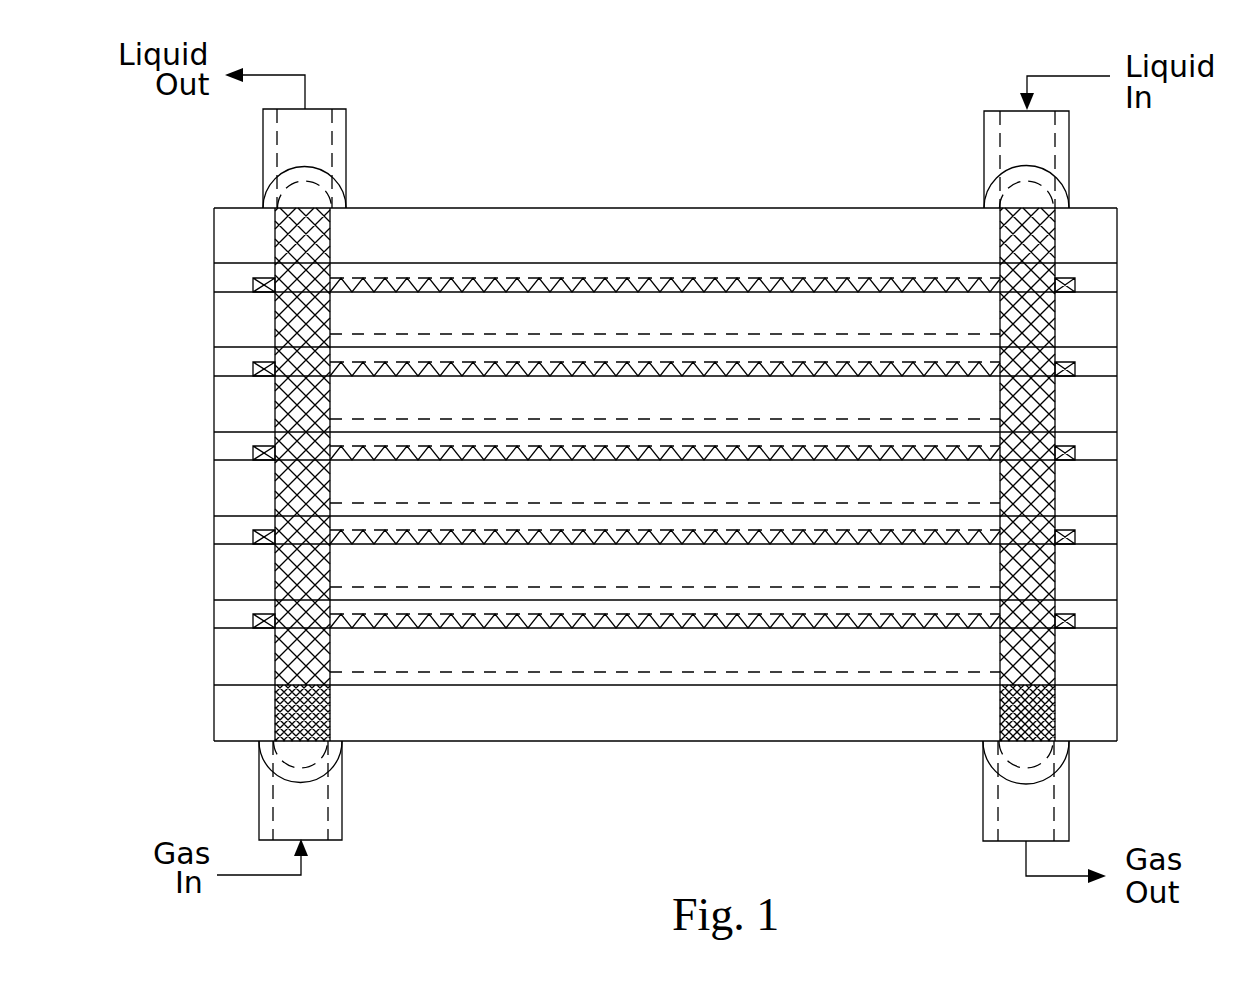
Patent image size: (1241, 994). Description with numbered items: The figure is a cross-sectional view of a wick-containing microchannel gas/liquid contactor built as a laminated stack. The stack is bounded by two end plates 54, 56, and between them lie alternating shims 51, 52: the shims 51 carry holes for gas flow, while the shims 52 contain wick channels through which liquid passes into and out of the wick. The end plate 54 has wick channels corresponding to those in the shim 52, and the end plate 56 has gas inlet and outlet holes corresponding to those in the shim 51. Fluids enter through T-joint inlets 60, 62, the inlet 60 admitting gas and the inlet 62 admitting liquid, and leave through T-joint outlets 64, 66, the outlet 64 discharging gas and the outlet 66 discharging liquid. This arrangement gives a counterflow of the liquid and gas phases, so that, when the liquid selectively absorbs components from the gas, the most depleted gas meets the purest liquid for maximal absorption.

The shim 51 is at (607, 490).
The shim 52 is at (665, 449).
The end plate 54 is at (235, 241).
The end plate 56 is at (235, 709).
The T-joint inlet 60 is at (303, 818).
The T-joint inlet 62 is at (1017, 150).
The T-joint outlet 64 is at (1017, 812).
The T-joint outlet 66 is at (316, 148).